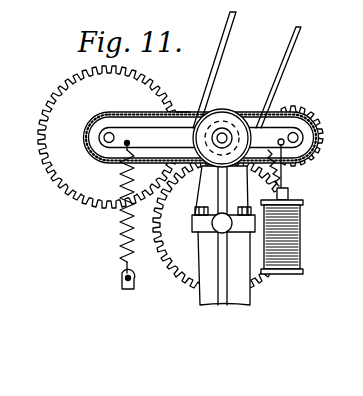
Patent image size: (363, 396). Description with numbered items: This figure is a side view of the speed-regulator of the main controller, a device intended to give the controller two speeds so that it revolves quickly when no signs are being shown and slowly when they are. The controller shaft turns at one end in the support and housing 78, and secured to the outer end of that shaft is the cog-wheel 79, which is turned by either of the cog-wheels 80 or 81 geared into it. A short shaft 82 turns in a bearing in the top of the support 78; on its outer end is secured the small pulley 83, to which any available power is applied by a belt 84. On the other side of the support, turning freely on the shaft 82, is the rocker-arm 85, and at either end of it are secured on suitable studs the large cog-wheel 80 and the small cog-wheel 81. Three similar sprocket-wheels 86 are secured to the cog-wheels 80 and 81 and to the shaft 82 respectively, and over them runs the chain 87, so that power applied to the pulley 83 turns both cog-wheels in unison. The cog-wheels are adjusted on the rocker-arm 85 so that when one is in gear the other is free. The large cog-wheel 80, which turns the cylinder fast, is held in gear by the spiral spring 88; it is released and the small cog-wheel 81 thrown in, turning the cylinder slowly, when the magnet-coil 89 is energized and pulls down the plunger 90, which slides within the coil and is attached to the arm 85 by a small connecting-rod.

The support and housing 78 is at (223, 235).
The cog-wheel 79 is at (222, 225).
The large cog-wheel 80 is at (109, 137).
The small cog-wheel 81 is at (321, 139).
The short shaft 82 is at (225, 128).
The small pulley 83 is at (212, 112).
The belt 84 is at (218, 52).
The rocker-arm 85 is at (201, 137).
The sprocket-wheels 86 is at (109, 131).
The chain 87 is at (182, 111).
The spiral spring 88 is at (121, 244).
The magnet-coil 89 is at (288, 230).
The plunger 90 is at (289, 194).